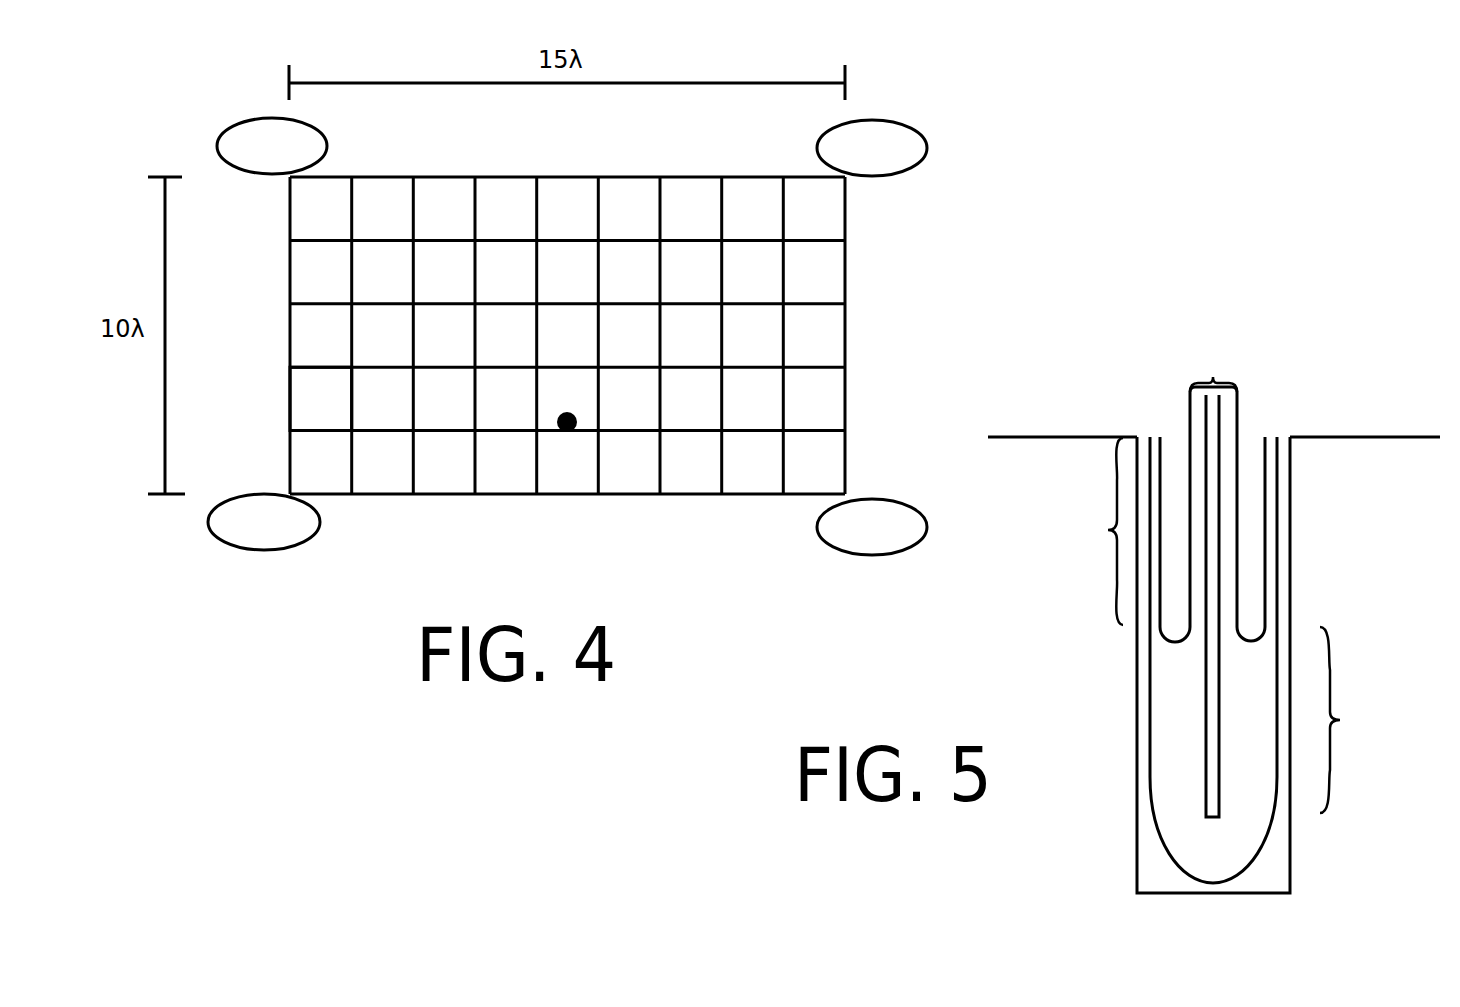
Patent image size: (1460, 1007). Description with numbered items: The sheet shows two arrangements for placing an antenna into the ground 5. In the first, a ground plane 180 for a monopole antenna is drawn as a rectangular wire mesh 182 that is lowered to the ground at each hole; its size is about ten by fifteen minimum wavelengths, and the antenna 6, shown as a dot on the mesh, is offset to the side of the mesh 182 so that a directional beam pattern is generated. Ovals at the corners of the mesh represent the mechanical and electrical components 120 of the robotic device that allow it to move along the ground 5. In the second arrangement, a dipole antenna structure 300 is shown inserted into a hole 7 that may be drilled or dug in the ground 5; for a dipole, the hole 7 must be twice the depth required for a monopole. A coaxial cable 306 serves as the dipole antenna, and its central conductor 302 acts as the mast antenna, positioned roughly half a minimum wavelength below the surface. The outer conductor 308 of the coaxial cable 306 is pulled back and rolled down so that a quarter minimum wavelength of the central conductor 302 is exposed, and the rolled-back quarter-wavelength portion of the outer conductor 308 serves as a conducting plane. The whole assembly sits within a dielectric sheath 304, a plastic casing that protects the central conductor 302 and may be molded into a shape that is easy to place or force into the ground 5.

In FIG. 4, the mechanical and electrical components 120 is at (219, 118).
In FIG. 4, the ground plane 180 is at (900, 311).
In FIG. 4, the wire mesh 182 is at (287, 388).
In FIG. 4, the antenna 6 is at (560, 450).
In FIG. 5, the dipole antenna structure 300 is at (974, 620).
In FIG. 5, the ground 5 is at (1385, 438).
In FIG. 5, the hole 7 is at (1290, 873).
In FIG. 5, the dielectric sheath 304 is at (1160, 833).
In FIG. 5, the outer conductor 308 is at (1268, 520).
In FIG. 5, the coaxial cable 306 is at (1213, 374).
In FIG. 5, the central conductor 302 is at (1195, 714).